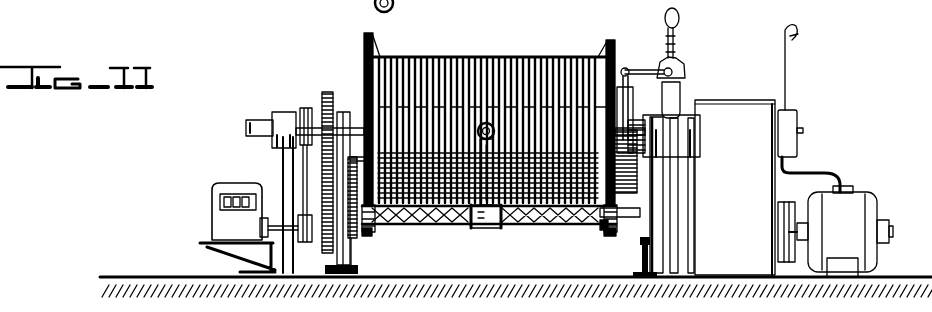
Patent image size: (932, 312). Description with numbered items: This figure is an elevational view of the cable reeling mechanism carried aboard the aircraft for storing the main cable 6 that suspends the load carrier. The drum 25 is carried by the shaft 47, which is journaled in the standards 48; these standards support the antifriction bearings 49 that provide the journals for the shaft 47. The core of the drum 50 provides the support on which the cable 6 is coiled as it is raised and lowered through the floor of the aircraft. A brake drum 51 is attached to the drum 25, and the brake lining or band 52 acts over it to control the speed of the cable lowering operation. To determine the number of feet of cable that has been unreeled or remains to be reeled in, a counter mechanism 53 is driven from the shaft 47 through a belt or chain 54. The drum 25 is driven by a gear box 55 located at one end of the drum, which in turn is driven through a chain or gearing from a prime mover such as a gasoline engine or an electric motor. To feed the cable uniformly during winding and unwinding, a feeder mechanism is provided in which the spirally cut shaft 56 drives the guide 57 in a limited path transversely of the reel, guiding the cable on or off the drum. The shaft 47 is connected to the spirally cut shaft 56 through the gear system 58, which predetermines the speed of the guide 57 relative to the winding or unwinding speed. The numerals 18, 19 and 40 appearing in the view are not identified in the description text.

The cable 6 is at (480, 126).
The stake 18 is at (330, 28).
The stake 19 is at (284, 17).
The drum 25 is at (605, 53).
The sheave 40 is at (398, 10).
The shaft 47 is at (355, 115).
The standards 48 is at (280, 163).
The antifriction bearings 49 is at (283, 117).
The core of the drum 50 is at (401, 116).
The brake drum 51 is at (643, 83).
The brake lining or band 52 is at (619, 68).
The counter mechanism 53 is at (227, 181).
The belt or chain 54 is at (303, 193).
The gear box 55 is at (715, 112).
The spirally cut shaft 56 is at (428, 218).
The guide 57 is at (525, 218).
The gear system 58 is at (345, 230).